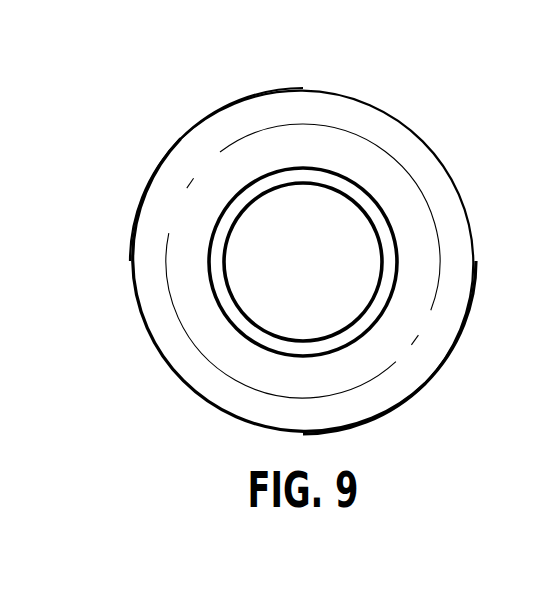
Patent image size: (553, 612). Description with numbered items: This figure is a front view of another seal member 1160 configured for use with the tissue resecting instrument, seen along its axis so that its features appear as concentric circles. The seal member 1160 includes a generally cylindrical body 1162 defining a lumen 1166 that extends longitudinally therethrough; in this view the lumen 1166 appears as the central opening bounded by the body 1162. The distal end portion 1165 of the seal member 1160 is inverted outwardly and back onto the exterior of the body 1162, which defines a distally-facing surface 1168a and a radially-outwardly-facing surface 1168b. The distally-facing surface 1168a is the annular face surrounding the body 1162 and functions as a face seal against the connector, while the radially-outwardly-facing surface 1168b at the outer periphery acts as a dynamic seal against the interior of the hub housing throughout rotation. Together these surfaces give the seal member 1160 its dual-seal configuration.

The seal member 1160 is at (267, 80).
The body 1162 is at (367, 210).
The distal end portion 1165 is at (425, 358).
The lumen 1166 is at (318, 276).
The distally-facing surface 1168a is at (215, 347).
The radially-outwardly-facing surface 1168b is at (195, 118).